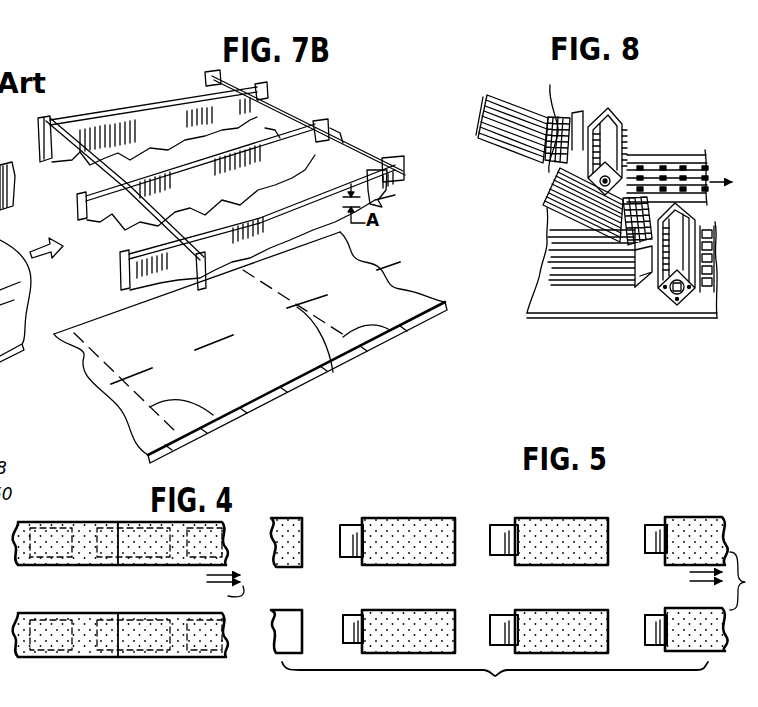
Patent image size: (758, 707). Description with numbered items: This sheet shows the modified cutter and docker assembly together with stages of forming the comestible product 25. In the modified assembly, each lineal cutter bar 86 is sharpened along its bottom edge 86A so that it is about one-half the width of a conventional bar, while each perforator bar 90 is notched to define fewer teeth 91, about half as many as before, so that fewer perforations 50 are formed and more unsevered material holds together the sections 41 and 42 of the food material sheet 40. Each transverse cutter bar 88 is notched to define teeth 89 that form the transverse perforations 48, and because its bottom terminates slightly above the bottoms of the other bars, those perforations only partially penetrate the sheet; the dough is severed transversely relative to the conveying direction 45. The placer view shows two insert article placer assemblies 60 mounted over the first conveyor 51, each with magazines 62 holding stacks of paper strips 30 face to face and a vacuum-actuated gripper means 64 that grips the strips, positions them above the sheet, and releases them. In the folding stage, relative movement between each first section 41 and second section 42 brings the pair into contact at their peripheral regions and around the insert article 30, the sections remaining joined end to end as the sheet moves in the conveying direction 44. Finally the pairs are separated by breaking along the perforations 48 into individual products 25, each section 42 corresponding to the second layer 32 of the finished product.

In FIG. 7B, the lineal cutter bar 86 is at (164, 127).
In FIG. 7B, the bottom edge of lineal cutter bar 86A is at (100, 177).
In FIG. 7B, the transverse cutter bar 88 is at (31, 125).
In FIG. 7B, the teeth of transverse cutter bar 89 is at (150, 240).
In FIG. 7B, the perforator bar 90 is at (328, 133).
In FIG. 7B, the teeth of perforator bar 91 is at (225, 180).
In FIG. 7B, the conveying direction 45 is at (49, 242).
In FIG. 7B, the food material sheet 40 is at (264, 403).
In FIG. 8, the food material sheet 40 is at (561, 268).
In FIG. 7B, the second section 42 is at (167, 338).
In FIG. 4, the second section 42 is at (70, 610).
In FIG. 5, the second section 42 is at (420, 551).
In FIG. 7B, the first section 41 is at (240, 388).
In FIG. 7B, the transverse perforations 48 is at (213, 413).
In FIG. 7B, the perforations 50 is at (305, 362).
In FIG. 8, the first conveyor 51 is at (543, 318).
In FIG. 8, the magazine 62 is at (523, 145).
In FIG. 8, the insert article 30 is at (560, 117).
In FIG. 4, the insert article 30 is at (110, 520).
In FIG. 5, the insert article 30 is at (496, 524).
In FIG. 8, the insert article placer assembly 60 is at (592, 108).
In FIG. 8, the vacuum-actuated gripper means 64 is at (618, 109).
In FIG. 4, the conveying direction 44 is at (227, 603).
In FIG. 5, the conveying direction 44 is at (714, 603).
In FIG. 5, the comestible product 25 is at (516, 571).
In FIG. 5, the second layer 32 is at (385, 518).